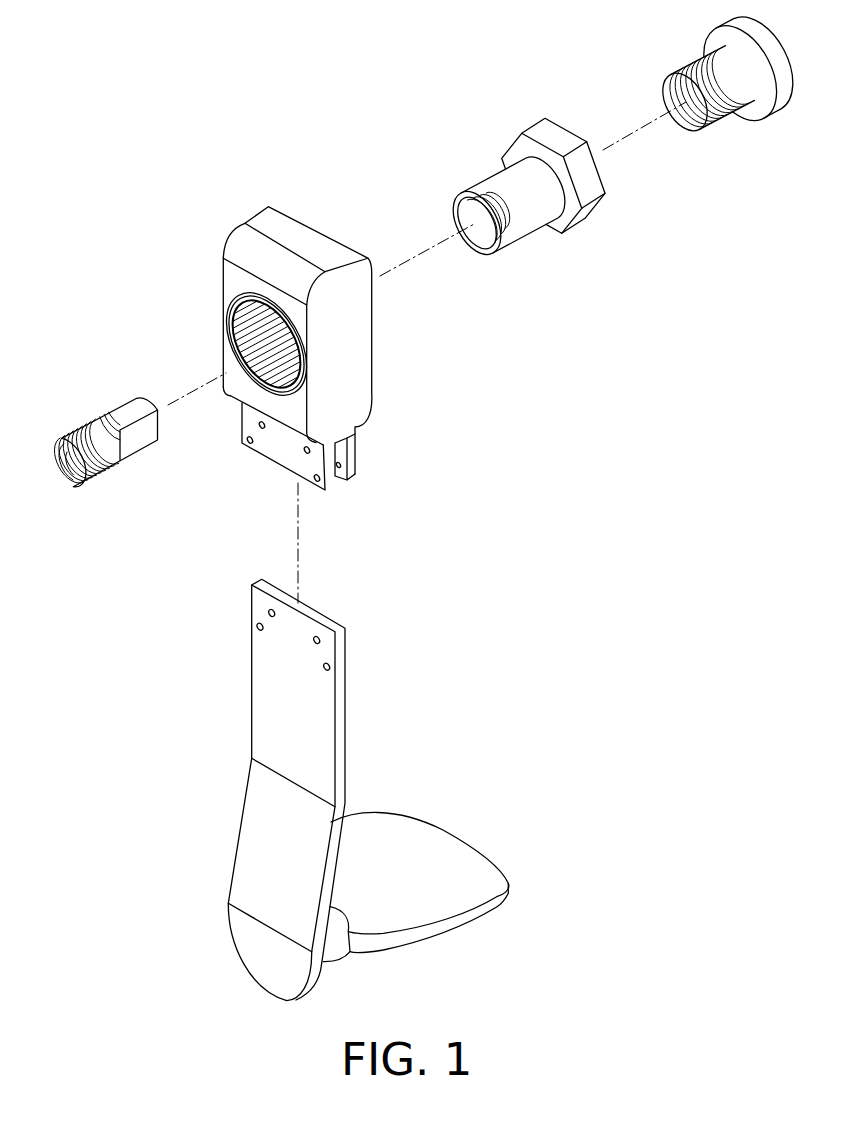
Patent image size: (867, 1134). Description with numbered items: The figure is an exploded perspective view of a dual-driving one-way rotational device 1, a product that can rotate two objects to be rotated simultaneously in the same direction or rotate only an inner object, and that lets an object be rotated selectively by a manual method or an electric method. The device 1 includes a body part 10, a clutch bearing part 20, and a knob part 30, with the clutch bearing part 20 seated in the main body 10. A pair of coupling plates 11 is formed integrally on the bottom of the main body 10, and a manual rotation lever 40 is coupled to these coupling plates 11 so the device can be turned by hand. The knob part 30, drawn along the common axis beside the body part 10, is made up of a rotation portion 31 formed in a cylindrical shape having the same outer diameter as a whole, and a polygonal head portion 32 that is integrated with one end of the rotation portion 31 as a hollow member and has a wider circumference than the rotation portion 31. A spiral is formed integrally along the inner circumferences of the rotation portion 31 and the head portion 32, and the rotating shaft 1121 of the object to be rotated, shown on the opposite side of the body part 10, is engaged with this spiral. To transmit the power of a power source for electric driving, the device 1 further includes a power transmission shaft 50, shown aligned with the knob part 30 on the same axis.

The dual-driving one-way rotational device 1 is at (42, 28).
The body part 10 is at (358, 378).
The coupling plates 11 is at (348, 460).
The clutch bearing part 20 is at (226, 300).
The rotating shaft 1121 is at (85, 436).
The knob part 30 is at (470, 128).
The rotation portion 31 is at (513, 227).
The head portion 32 is at (588, 216).
The manual rotation lever 40 is at (250, 858).
The power transmission shaft 50 is at (695, 120).